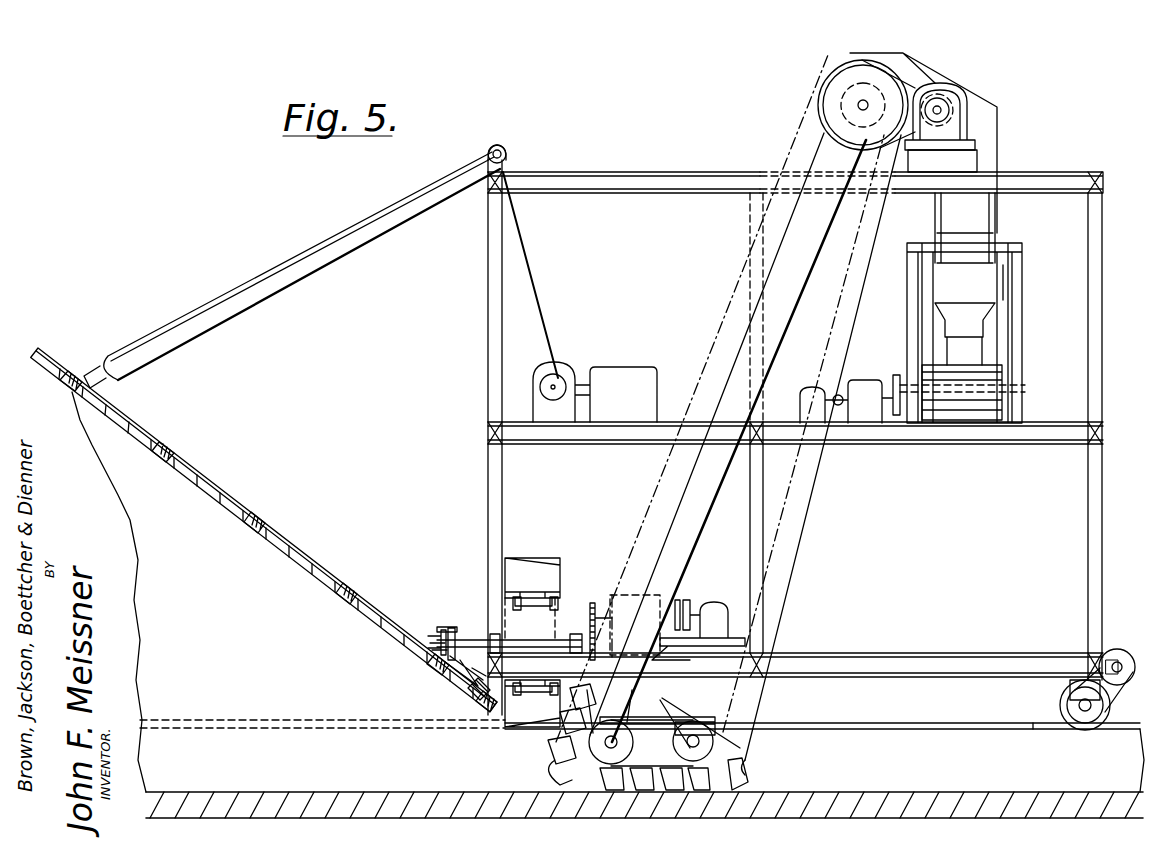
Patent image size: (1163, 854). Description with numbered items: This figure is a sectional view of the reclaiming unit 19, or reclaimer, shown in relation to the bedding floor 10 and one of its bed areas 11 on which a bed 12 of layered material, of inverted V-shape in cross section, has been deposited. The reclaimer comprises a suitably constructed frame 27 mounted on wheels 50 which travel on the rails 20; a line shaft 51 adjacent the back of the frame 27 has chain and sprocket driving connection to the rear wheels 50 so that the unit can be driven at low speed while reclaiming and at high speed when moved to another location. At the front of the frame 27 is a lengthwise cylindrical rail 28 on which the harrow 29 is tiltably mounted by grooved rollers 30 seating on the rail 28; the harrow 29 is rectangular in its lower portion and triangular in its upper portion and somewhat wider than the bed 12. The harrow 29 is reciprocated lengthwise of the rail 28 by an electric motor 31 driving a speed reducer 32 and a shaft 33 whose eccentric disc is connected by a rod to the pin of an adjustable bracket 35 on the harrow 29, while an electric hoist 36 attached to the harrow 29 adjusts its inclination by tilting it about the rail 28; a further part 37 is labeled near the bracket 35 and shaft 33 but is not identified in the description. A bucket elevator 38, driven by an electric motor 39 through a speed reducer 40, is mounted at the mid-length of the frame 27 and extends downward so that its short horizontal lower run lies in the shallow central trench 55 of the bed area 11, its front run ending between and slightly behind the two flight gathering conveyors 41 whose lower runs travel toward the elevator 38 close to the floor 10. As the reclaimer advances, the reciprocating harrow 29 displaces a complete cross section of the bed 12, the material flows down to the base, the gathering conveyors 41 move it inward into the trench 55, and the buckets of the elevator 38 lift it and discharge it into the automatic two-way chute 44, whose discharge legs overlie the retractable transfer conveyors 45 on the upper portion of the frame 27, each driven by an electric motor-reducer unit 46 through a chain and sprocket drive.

The bedding floor 10 is at (932, 723).
The bed area 11 is at (290, 722).
The bed of layered material 12 is at (208, 658).
The reclaiming unit 19 is at (603, 128).
The rail 20 is at (1033, 725).
The frame 27 is at (855, 435).
The cylindrical rail 28 is at (472, 693).
The harrow 29 is at (343, 587).
The grooved roller 30 is at (445, 670).
The electric motor 31 is at (712, 615).
The speed reducer 32 is at (608, 596).
The shaft 33 is at (525, 642).
The adjustable bracket 35 is at (430, 647).
The electric hoist 36 is at (607, 360).
The bearing bracket 37 is at (455, 628).
The bucket elevator 38 is at (711, 332).
The electric motor 39 is at (950, 130).
The speed reducer 40 is at (963, 110).
The flight gathering conveyor 41 is at (528, 572).
The two-way chute 44 is at (1010, 157).
The transfer conveyor 45 is at (1033, 356).
The electric motor-reducer unit 46 is at (868, 390).
The wheel 50 is at (1105, 712).
The line shaft 51 is at (1120, 650).
The trench 55 is at (775, 755).